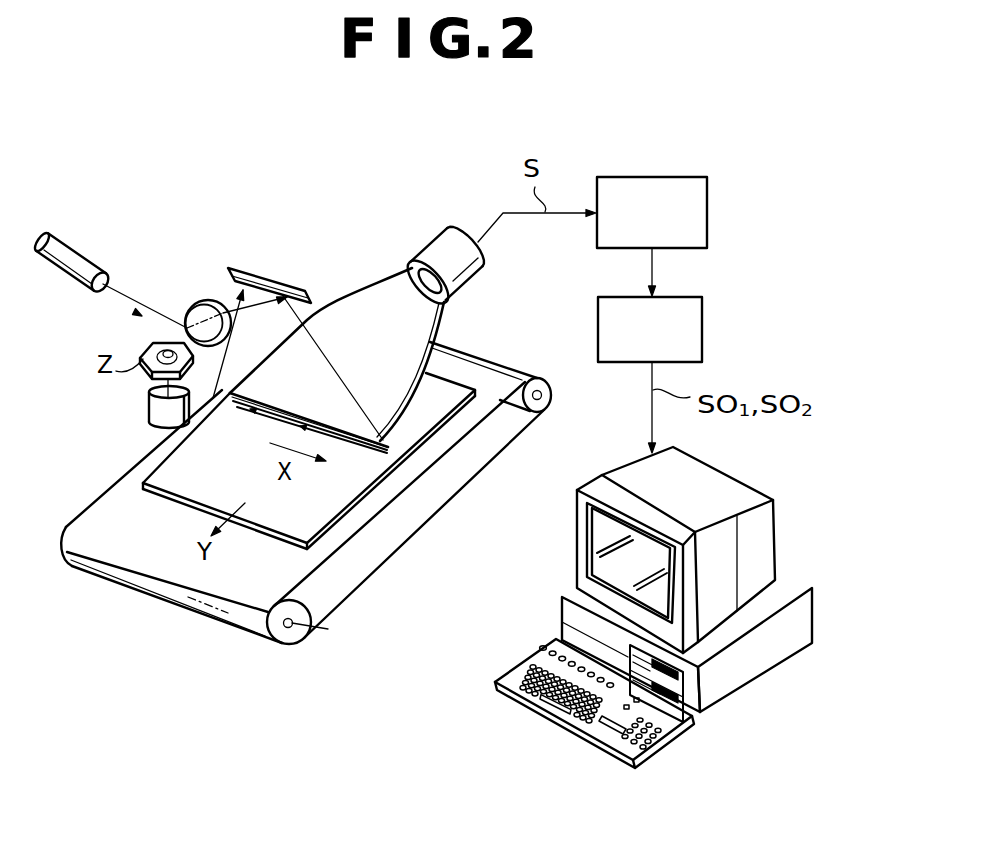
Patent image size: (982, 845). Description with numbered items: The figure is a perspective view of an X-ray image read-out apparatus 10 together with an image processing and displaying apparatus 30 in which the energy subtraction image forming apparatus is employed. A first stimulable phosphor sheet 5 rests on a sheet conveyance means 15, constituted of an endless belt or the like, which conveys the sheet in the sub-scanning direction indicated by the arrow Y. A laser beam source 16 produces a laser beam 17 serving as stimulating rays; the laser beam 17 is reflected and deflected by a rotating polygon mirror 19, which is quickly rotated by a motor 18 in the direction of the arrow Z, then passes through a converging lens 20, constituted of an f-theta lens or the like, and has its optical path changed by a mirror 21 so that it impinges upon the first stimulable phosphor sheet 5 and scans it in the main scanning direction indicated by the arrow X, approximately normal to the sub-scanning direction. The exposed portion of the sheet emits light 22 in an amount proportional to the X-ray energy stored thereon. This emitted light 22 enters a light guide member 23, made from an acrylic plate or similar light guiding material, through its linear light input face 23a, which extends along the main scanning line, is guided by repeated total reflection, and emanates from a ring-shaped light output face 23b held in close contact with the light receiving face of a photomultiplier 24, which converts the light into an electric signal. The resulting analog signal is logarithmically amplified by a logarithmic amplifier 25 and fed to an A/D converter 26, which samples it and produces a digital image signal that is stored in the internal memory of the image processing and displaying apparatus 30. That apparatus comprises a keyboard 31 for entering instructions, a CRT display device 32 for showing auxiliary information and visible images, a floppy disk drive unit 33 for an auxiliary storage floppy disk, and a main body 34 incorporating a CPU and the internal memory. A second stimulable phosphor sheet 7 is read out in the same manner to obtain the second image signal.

The X-ray image read-out apparatus 10 is at (220, 167).
The laser beam source 16 is at (68, 242).
The laser beam 17 is at (120, 294).
The motor 18 is at (150, 403).
The rotating polygon mirror 19 is at (140, 354).
The converging lens 20 is at (203, 300).
The mirror 21 is at (288, 273).
The emitted light 22 is at (252, 407).
The light guide member 23 is at (382, 313).
The linear light input face 23a is at (382, 440).
The ring-shaped light output face 23b is at (442, 304).
The photomultiplier 24 is at (440, 242).
The logarithmic amplifier 25 is at (707, 230).
The A/D converter 26 is at (703, 325).
The first stimulable phosphor sheet 5 is at (310, 469).
The second stimulable phosphor sheet 7 is at (340, 500).
The sheet conveyance means 15 is at (302, 560).
The image processing and displaying apparatus 30 is at (663, 602).
The keyboard 31 is at (527, 686).
The CRT display device 32 is at (598, 533).
The floppy disk drive unit 33 is at (686, 672).
The main body 34 is at (788, 587).